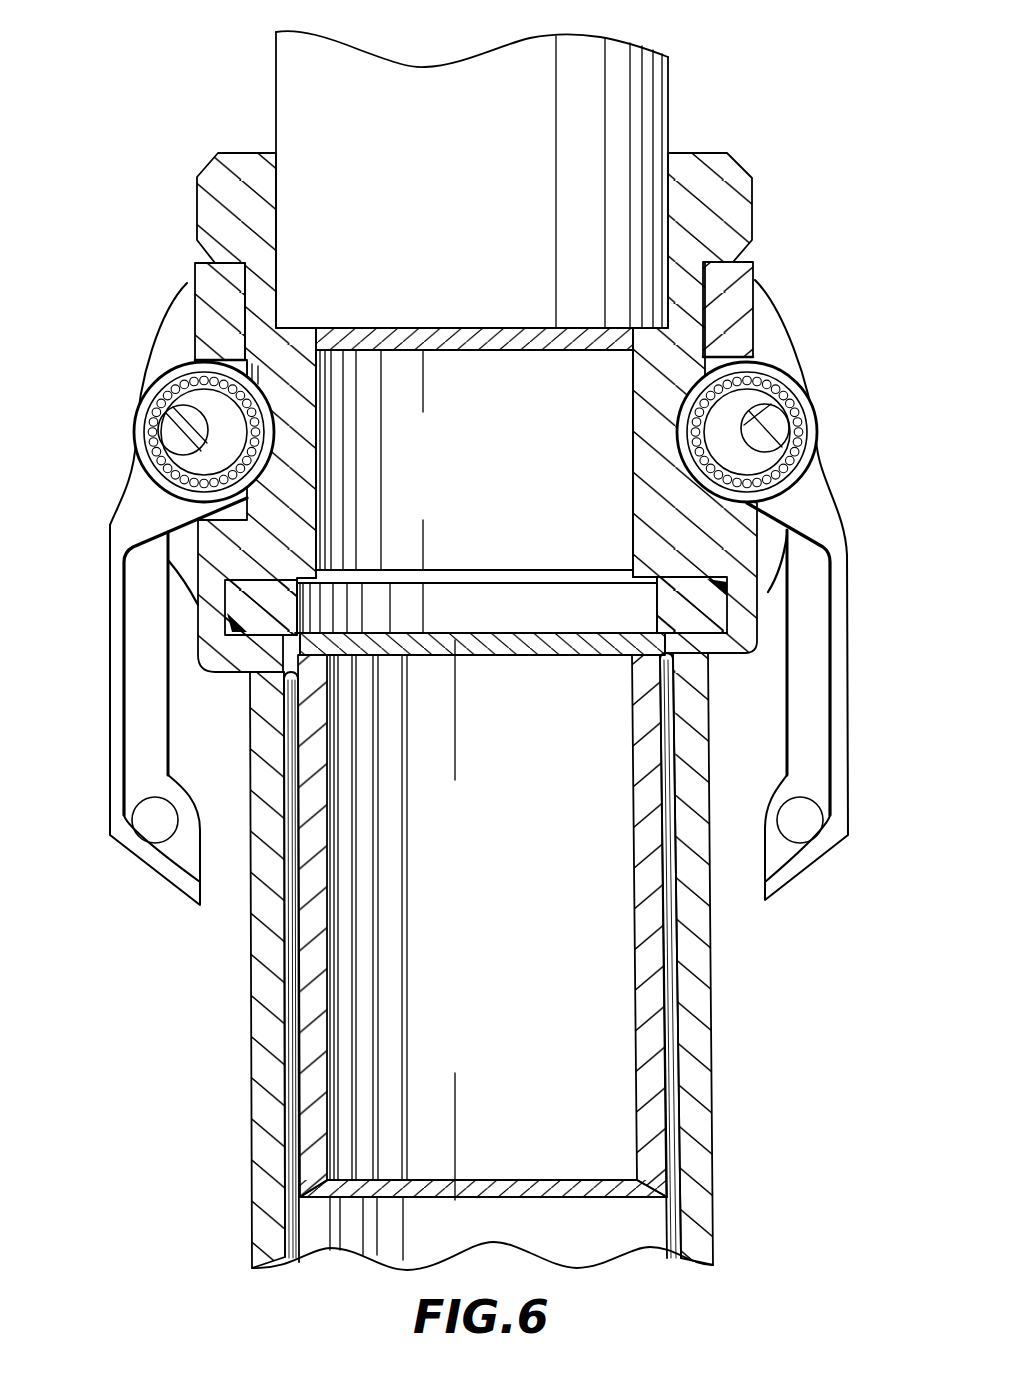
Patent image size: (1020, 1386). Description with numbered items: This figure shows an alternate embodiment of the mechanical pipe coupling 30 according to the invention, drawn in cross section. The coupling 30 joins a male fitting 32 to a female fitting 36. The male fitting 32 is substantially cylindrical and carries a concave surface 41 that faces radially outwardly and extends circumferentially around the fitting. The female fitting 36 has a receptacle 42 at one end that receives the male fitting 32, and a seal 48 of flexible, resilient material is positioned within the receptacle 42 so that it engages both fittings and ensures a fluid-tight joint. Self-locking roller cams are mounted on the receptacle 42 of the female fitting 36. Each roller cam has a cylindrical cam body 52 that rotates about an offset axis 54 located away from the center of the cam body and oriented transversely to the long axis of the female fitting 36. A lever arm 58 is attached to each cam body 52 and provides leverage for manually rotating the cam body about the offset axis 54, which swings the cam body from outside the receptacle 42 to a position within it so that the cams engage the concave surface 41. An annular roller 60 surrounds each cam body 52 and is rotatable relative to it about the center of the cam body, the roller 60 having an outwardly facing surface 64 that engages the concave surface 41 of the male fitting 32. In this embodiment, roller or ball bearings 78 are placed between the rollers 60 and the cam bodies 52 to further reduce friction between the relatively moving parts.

The pipe coupling 30 is at (178, 1036).
The male fitting 32 is at (710, 175).
The female fitting 36 is at (307, 993).
The concave surface 41 is at (193, 363).
The receptacle 42 is at (213, 295).
The seal 48 is at (547, 613).
The cam body 52 is at (244, 418).
The offset axis 54 is at (158, 420).
The lever arm 58 is at (143, 743).
The annular roller 60 is at (140, 440).
The outwardly facing surface 64 is at (150, 483).
The ball bearings 78 is at (262, 428).